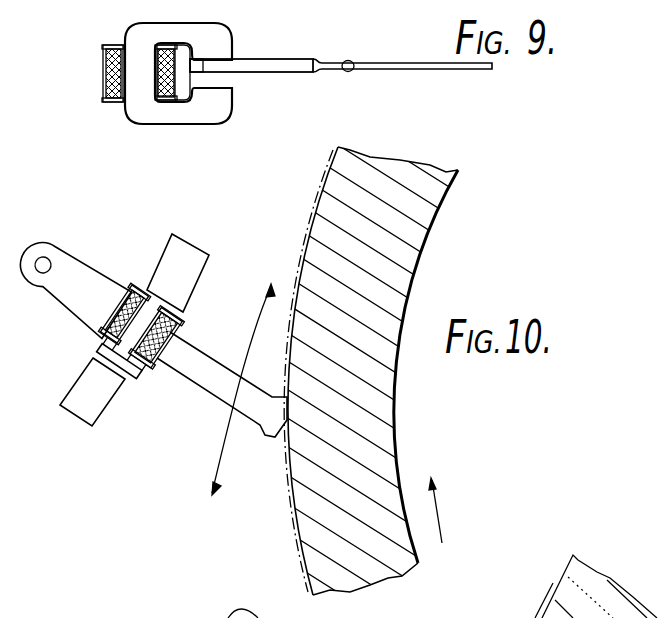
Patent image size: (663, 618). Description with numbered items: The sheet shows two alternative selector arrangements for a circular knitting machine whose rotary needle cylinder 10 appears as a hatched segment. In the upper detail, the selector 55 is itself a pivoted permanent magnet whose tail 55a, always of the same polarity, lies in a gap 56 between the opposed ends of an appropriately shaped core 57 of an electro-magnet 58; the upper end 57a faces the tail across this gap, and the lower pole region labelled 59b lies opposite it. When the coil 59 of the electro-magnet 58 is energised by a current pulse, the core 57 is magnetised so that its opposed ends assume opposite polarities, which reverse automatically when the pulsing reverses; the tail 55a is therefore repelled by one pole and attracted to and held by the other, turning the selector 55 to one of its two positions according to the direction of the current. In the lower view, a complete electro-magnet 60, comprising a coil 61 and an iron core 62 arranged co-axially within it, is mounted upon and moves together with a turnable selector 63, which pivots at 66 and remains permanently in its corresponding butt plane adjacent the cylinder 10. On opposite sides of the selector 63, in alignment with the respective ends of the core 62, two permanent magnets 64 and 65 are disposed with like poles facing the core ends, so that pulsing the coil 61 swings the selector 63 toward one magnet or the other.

In FIG. 9, the core 57 is at (132, 36).
In FIG. 9, the end of core 57a is at (210, 45).
In FIG. 9, the tail of selector 55a is at (275, 65).
In FIG. 9, the selector 55 is at (323, 58).
In FIG. 9, the gap 56 is at (232, 79).
In FIG. 9, the lower pole arm of yoke 59b is at (227, 95).
In FIG. 9, the coil 59 is at (105, 75).
In FIG. 9, the electro-magnet 58 is at (120, 107).
In FIG. 10, the rotary needle cylinder 10 is at (408, 262).
In FIG. 10, the pivot 66 is at (47, 260).
In FIG. 10, the iron core 62 is at (150, 312).
In FIG. 10, the coil 61 is at (172, 331).
In FIG. 10, the electro-magnet 60 is at (100, 337).
In FIG. 10, the selector 63 is at (203, 378).
In FIG. 10, the permanent magnet 65 is at (208, 254).
In FIG. 10, the permanent magnet 64 is at (110, 408).